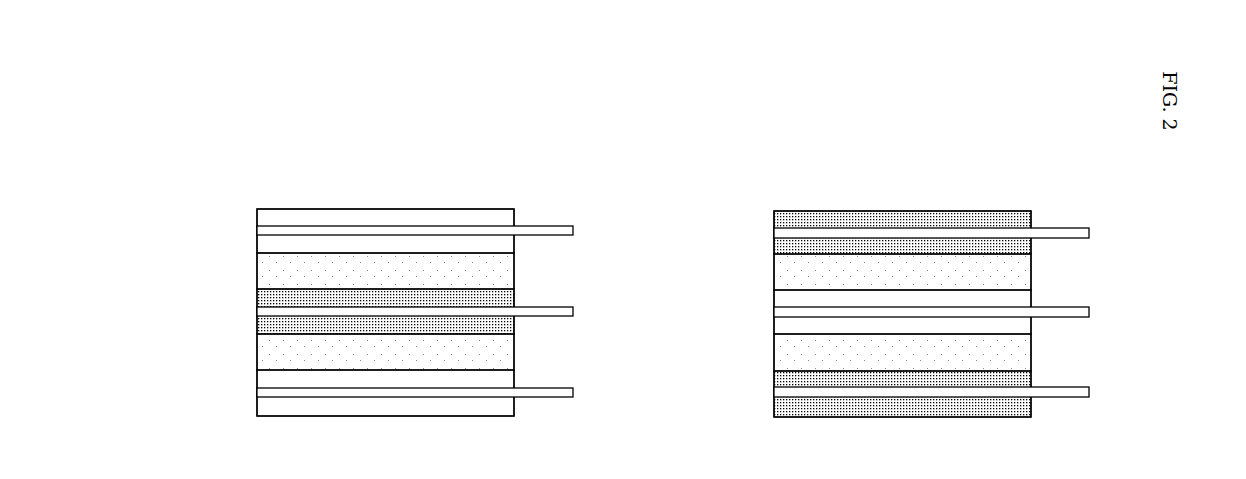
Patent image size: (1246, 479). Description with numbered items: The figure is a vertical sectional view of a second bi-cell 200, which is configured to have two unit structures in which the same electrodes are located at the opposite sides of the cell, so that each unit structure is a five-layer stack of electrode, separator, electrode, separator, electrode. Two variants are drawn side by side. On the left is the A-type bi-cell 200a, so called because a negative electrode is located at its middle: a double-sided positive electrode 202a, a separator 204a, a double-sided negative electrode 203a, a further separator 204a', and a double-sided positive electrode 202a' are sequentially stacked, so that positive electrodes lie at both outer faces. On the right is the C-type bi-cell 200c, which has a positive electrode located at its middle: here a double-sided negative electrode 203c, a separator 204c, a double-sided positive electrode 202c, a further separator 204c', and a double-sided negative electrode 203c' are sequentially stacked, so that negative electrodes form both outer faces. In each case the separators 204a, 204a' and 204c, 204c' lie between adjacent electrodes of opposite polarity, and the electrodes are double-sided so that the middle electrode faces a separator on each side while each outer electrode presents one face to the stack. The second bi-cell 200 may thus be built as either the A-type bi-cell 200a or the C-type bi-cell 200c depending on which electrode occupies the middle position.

The second bi-cell 200 is at (288, 66).
The A-type bi-cell 200a is at (279, 193).
The C-type bi-cell 200c is at (975, 193).
The double-sided positive electrode 202a is at (385, 231).
The double-sided positive electrode 202a' is at (385, 393).
The double-sided negative electrode 203a is at (250, 297).
The separator 204a is at (323, 271).
The separator 204a' is at (319, 352).
The double-sided negative electrode 203c is at (897, 232).
The double-sided negative electrode 203c' is at (899, 394).
The double-sided positive electrode 202c is at (763, 297).
The separator 204c is at (835, 272).
The separator 204c' is at (834, 352).